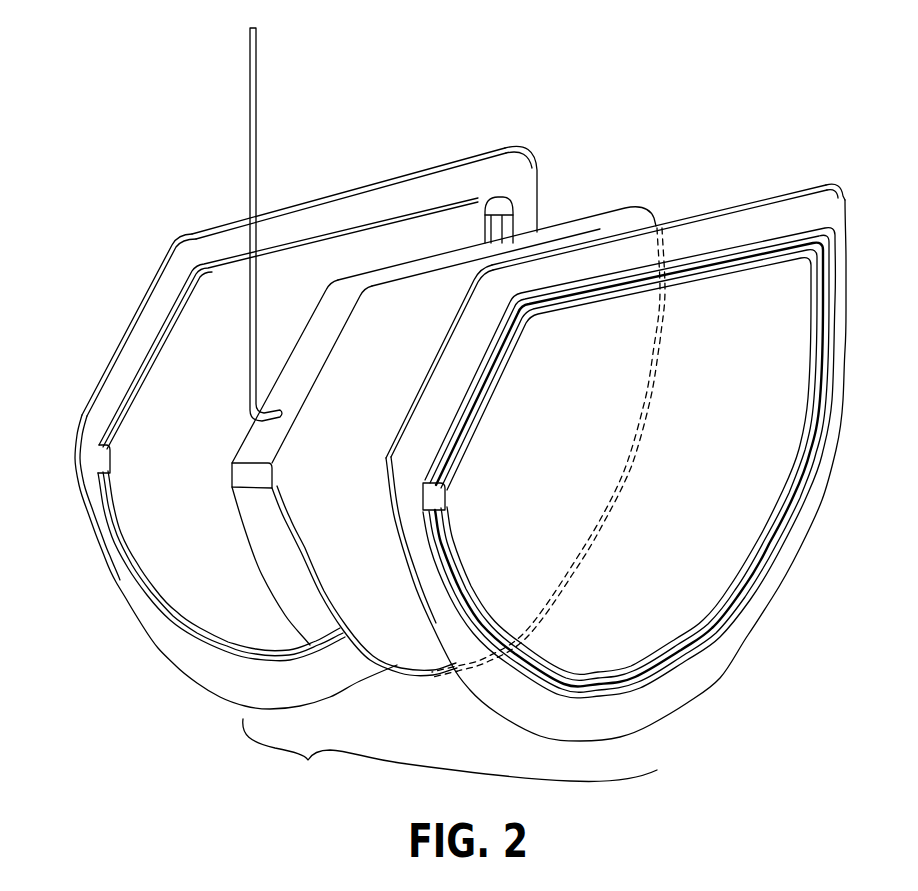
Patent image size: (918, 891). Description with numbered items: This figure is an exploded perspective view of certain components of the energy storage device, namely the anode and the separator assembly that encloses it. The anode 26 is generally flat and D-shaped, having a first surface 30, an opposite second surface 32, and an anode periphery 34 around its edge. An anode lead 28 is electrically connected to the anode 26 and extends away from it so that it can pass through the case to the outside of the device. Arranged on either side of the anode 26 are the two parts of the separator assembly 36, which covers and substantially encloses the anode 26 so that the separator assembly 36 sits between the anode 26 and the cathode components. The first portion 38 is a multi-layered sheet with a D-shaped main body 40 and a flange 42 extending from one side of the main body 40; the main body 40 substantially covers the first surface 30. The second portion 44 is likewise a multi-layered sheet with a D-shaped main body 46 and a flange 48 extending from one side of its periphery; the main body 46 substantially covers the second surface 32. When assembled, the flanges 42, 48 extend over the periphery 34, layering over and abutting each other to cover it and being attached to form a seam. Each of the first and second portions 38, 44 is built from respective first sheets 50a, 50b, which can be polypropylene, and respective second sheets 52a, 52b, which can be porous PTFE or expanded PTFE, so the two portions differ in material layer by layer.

The anode 26 is at (444, 391).
The anode lead 28 is at (255, 94).
The first surface 30 is at (390, 268).
The second surface 32 is at (493, 197).
The anode periphery 34 is at (305, 325).
The separator assembly 36 is at (450, 751).
The first portion 38 is at (282, 410).
The main body 40 is at (207, 347).
The flange 42 is at (93, 423).
The second portion 44 is at (628, 435).
The main body 46 is at (709, 482).
The flange 48 is at (697, 243).
The first sheet 50a is at (447, 310).
The first sheet 50b is at (770, 187).
The second sheet 52a is at (330, 197).
The second sheet 52b is at (770, 473).